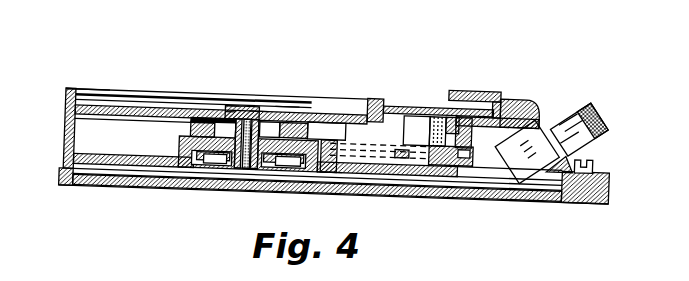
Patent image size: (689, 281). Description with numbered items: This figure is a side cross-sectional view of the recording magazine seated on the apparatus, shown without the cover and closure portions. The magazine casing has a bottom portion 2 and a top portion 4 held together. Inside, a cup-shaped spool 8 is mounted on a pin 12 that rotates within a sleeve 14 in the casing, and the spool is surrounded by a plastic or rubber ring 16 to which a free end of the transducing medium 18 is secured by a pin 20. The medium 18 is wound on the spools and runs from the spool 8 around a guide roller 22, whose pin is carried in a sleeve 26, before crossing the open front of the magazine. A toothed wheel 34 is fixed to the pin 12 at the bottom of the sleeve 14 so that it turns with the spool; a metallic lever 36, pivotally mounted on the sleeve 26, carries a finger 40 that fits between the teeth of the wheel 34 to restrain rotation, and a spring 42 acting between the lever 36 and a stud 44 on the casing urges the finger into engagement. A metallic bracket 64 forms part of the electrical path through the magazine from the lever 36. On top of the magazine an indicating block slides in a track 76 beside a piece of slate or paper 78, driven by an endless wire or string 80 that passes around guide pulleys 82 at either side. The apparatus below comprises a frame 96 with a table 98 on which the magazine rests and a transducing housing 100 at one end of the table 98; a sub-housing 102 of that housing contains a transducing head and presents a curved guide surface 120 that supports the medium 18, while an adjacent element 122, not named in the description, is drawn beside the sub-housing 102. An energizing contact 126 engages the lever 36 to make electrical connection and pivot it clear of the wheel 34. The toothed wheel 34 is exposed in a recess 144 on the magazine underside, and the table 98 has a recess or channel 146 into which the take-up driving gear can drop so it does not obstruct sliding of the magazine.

The bottom portion 2 is at (66, 144).
The top portion 4 is at (66, 100).
The cup-shaped spool 8 is at (277, 124).
The pin 12 is at (257, 109).
The sleeve 14 is at (238, 117).
The plastic or rubber ring 16 is at (303, 116).
The transducing medium 18 is at (192, 126).
The pin 20 is at (198, 116).
The guide roller 22 is at (429, 118).
The sleeve 26 is at (442, 150).
The toothed wheel 34 is at (215, 166).
The lever 36 is at (401, 147).
The finger 40 is at (248, 164).
The spring 42 is at (341, 135).
The stud 44 is at (329, 171).
The bracket 64 is at (337, 173).
The track 76 is at (258, 114).
The piece of slate or paper 78 is at (286, 110).
The endless wire or string 80 is at (222, 108).
The guide pulley 82 is at (221, 105).
The frame 96 is at (602, 205).
The table 98 is at (105, 171).
The transducing housing 100 is at (510, 113).
The sub-housing 102 is at (504, 166).
The curved guide surface 120 is at (449, 106).
The cylinder 122 is at (594, 116).
The energizing contact 126 is at (470, 172).
The recess 144 is at (302, 154).
The recess or channel 146 is at (175, 174).